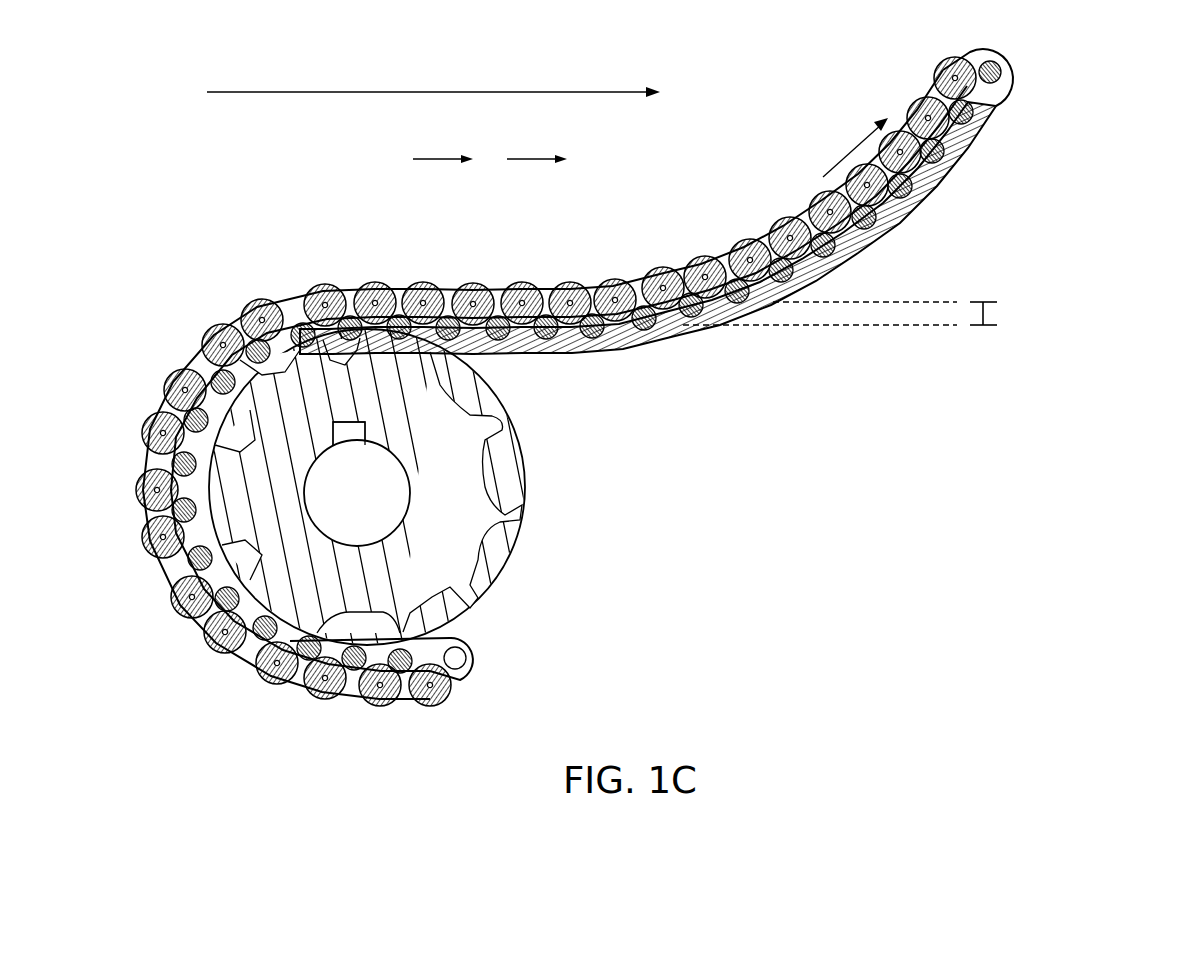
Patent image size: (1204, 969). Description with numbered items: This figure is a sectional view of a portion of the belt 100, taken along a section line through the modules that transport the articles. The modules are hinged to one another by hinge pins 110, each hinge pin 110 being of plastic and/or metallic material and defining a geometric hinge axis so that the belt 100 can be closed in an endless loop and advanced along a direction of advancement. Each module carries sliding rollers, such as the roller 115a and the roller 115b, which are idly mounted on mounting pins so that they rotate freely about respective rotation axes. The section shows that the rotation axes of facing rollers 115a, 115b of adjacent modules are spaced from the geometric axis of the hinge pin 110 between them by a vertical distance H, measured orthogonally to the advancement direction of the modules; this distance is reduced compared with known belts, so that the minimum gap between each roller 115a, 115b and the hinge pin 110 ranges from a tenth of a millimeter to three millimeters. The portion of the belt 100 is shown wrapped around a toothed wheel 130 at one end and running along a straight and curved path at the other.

The belt 100 is at (1092, 149).
The hinge pin 110 is at (545, 353).
The sliding roller 115a is at (418, 283).
The sliding roller 115b is at (537, 288).
The sprocket 130 is at (528, 508).